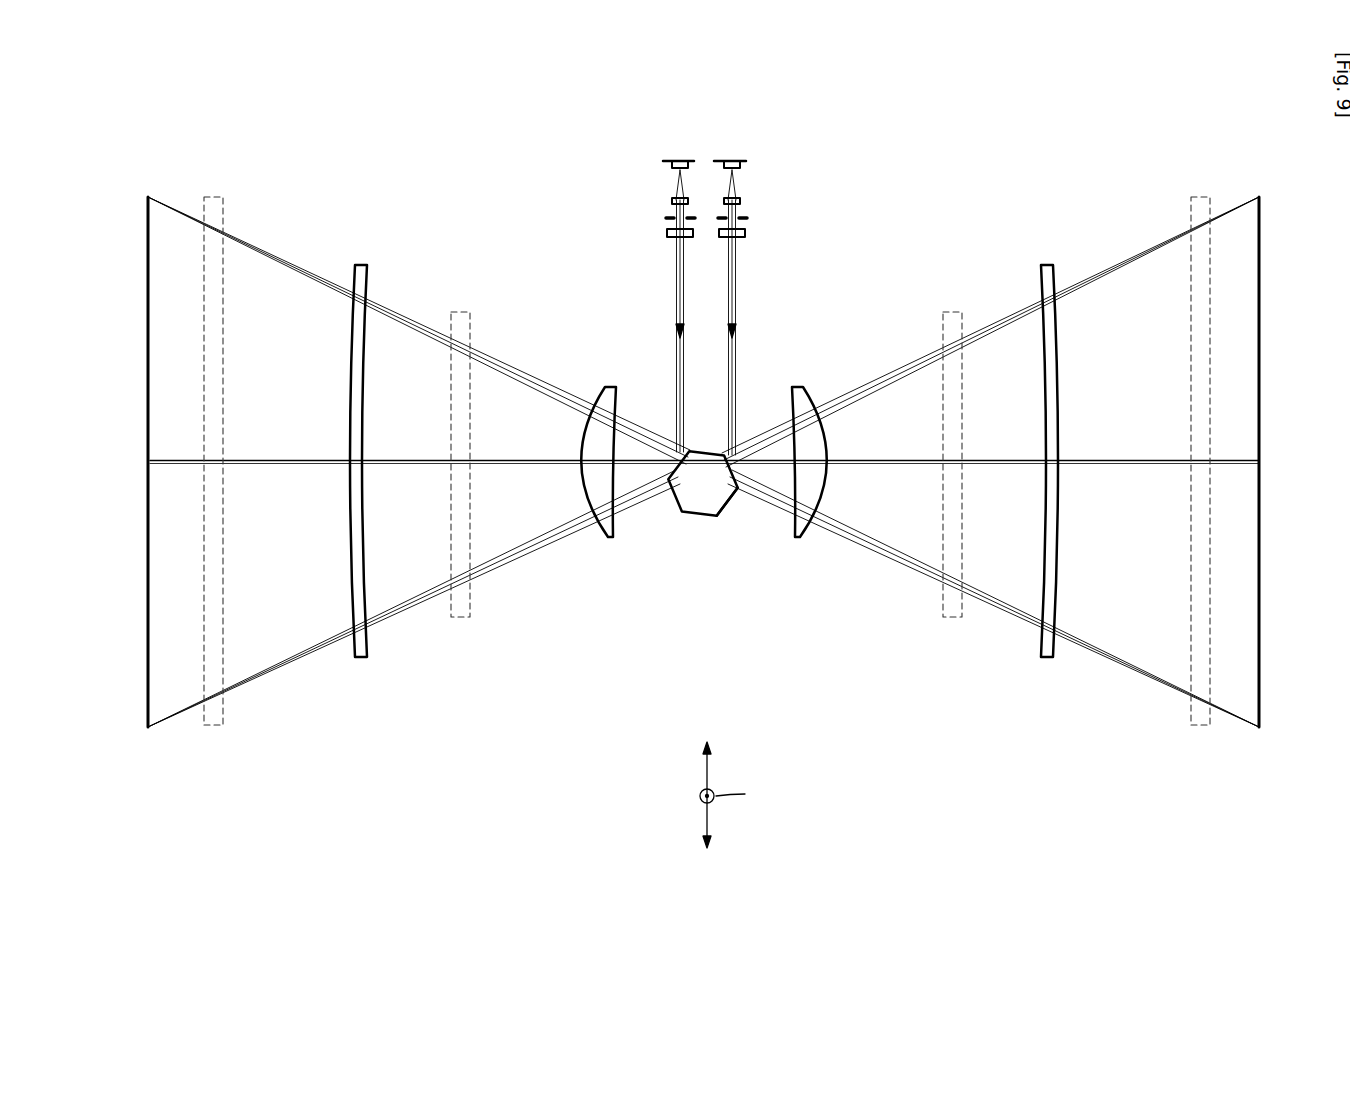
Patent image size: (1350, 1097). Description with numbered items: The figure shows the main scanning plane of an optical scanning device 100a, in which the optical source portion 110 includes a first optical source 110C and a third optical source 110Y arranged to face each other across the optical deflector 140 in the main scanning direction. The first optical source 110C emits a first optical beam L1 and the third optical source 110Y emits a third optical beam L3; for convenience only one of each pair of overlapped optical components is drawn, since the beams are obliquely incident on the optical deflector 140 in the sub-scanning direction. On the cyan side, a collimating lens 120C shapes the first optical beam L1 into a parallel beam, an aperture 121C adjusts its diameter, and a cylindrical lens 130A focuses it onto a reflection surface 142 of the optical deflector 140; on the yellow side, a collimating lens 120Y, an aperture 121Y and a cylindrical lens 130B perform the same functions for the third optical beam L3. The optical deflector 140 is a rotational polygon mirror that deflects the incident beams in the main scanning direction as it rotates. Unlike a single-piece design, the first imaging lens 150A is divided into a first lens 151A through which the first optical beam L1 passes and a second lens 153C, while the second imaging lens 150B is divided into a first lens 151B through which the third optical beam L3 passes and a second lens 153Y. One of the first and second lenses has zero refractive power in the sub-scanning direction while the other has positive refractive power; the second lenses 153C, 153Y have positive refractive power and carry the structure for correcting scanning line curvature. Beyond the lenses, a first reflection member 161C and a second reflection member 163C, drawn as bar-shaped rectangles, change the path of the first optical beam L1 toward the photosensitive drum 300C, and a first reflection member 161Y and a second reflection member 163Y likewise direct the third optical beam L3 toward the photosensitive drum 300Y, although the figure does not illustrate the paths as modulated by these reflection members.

The optical scanning device 100a is at (326, 78).
The optical source portion 110 is at (848, 89).
The third optical source 110Y is at (677, 159).
The first optical source 110C is at (735, 159).
The collimating lens 120Y is at (672, 200).
The collimating lens 120C is at (740, 200).
The aperture 121Y is at (666, 218).
The aperture 121C is at (746, 218).
The cylindrical lens 130B is at (667, 236).
The cylindrical lens 130A is at (745, 236).
The third optical beam L3 is at (643, 311).
The first optical beam L1 is at (769, 312).
The optical deflector 140 is at (705, 508).
The reflection surface 142 is at (728, 503).
The first lens 151B is at (612, 537).
The first lens 151A is at (795, 537).
The second imaging lens 150B is at (566, 664).
The first imaging lens 150A is at (868, 664).
The second lens 153Y is at (360, 658).
The second lens 153C is at (1047, 657).
The first reflection member 161Y is at (462, 315).
The first reflection member 161C is at (952, 315).
The second reflection member 163Y is at (215, 723).
The second reflection member 163C is at (1200, 723).
The photosensitive drum 300Y is at (148, 228).
The photosensitive drum 300C is at (1259, 228).